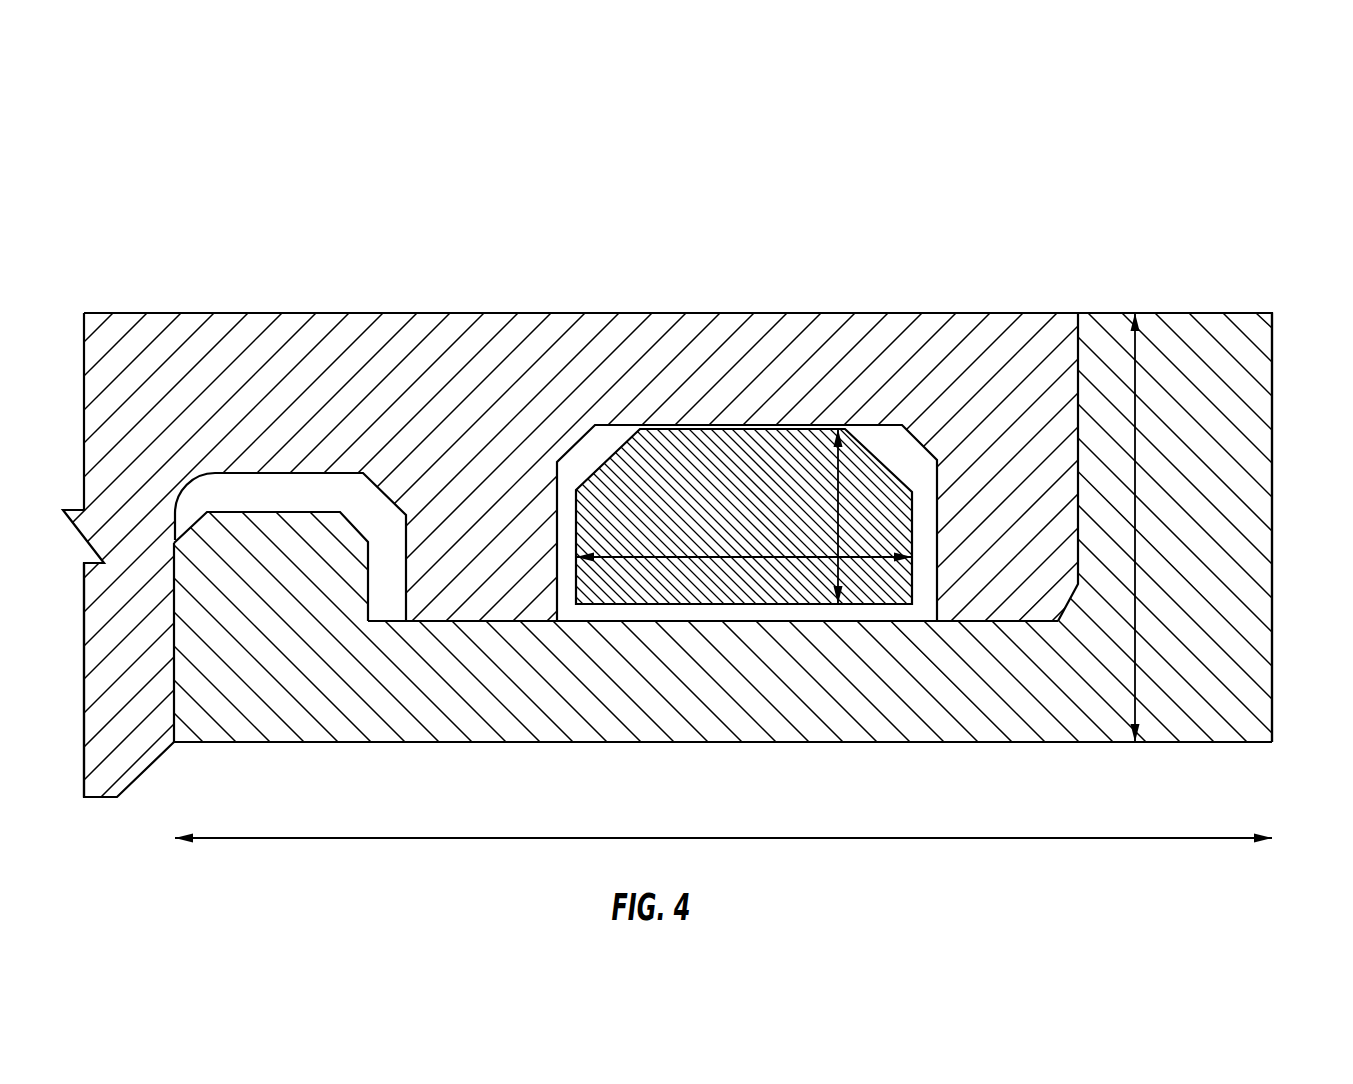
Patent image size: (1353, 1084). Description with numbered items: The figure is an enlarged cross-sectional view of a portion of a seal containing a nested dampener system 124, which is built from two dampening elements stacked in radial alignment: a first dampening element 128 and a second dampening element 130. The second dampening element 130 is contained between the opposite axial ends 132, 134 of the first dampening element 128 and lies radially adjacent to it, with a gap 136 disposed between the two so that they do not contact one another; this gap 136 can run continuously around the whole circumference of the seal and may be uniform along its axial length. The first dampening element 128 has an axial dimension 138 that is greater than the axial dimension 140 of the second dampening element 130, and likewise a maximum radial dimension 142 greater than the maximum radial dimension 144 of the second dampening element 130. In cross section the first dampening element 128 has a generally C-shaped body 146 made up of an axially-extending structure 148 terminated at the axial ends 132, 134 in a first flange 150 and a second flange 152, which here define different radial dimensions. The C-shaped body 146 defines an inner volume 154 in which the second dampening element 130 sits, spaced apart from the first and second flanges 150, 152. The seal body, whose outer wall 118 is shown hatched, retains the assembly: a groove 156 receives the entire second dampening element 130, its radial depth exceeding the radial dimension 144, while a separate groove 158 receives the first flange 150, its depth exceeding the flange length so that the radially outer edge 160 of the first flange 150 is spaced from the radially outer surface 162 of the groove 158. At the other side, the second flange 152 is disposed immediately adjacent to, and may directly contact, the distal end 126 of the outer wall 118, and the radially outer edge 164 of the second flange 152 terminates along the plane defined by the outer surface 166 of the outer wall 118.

The outer wall 118 is at (982, 359).
The nested dampener system 124 is at (1297, 211).
The distal end 126 is at (1076, 340).
The first dampening element 128 is at (1191, 390).
The second dampening element 130 is at (791, 507).
The axial end 132 is at (175, 588).
The axial end 134 is at (1272, 677).
The gap 136 is at (752, 615).
The axial dimension 138 is at (820, 838).
The axial dimension 140 is at (713, 557).
The maximum radial dimension 142 is at (1135, 548).
The maximum radial dimension 144 is at (838, 502).
The C-shaped body 146 is at (298, 705).
The axially-extending structure 148 is at (612, 695).
The first flange 150 is at (290, 613).
The second flange 152 is at (1206, 491).
The inner volume 154 is at (486, 533).
The groove 156 is at (617, 425).
The groove 158 is at (292, 472).
The radially outer edge 160 is at (249, 502).
The radially outer surface 162 is at (339, 474).
The radially outer edge 164 is at (1244, 300).
The outer surface 166 is at (945, 313).